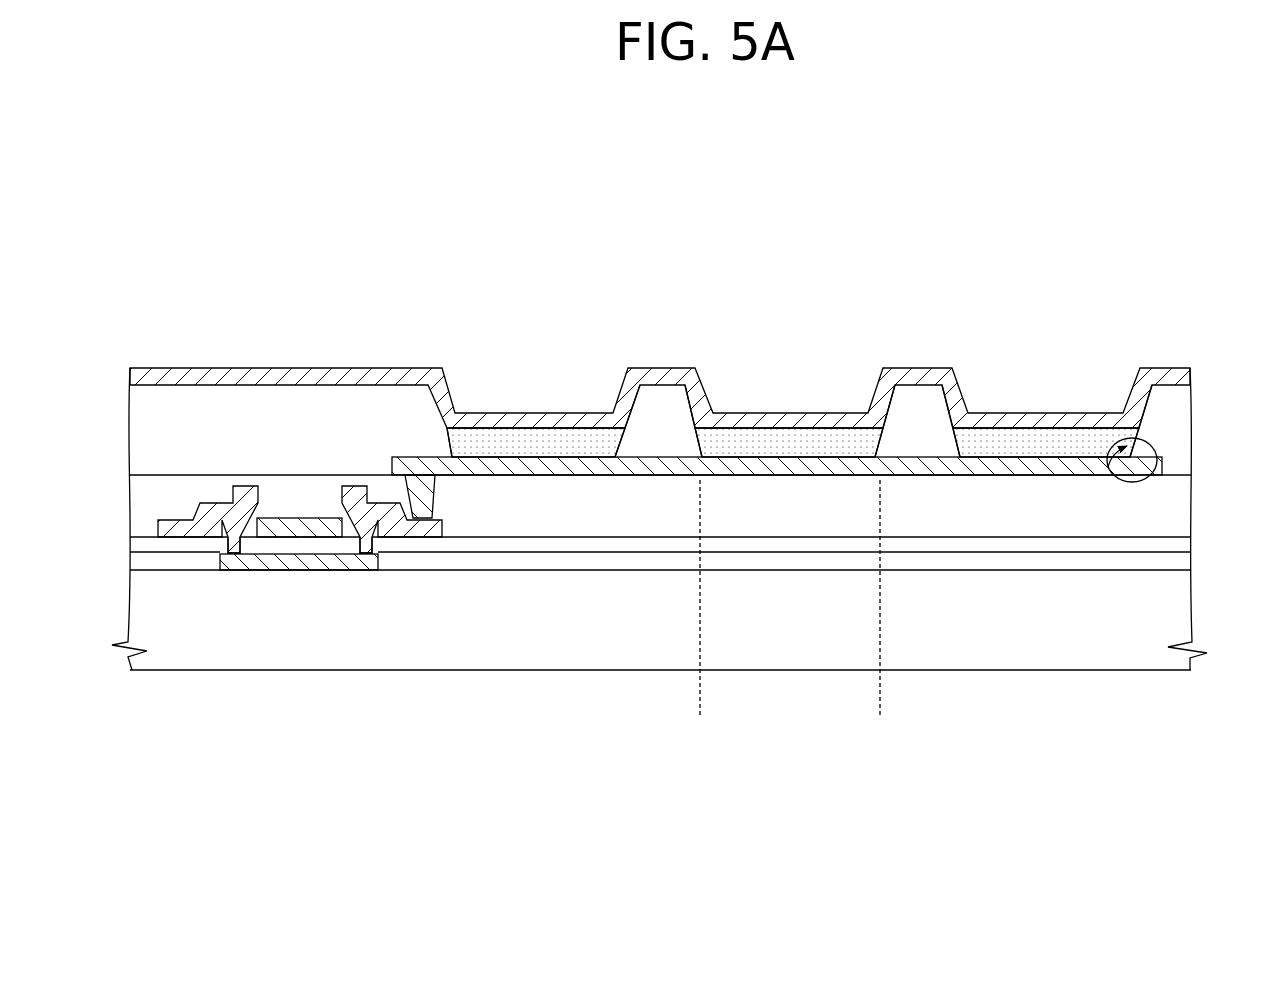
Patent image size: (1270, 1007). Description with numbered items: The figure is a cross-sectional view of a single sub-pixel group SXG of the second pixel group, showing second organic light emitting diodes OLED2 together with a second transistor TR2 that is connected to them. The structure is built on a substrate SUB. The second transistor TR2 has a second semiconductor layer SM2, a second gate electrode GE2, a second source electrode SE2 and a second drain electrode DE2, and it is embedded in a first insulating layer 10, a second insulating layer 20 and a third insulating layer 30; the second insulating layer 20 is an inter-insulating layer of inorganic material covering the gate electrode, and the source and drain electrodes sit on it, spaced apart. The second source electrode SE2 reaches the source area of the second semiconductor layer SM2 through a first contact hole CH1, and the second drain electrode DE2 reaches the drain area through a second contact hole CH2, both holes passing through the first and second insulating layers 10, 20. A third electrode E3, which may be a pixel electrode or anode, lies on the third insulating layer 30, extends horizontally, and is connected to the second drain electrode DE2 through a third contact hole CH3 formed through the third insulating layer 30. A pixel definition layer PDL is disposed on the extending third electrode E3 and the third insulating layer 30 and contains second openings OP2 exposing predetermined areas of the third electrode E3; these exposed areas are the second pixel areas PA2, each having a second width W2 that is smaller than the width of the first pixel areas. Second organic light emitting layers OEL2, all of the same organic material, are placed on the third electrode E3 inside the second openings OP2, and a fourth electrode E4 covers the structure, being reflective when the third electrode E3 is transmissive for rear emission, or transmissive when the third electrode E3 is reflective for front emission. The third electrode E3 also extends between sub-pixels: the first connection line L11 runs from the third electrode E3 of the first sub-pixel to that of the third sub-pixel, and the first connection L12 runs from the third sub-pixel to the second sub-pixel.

The first contact hole CH1 is at (205, 512).
The second contact hole CH2 is at (395, 510).
The third contact hole CH3 is at (432, 492).
The second organic light emitting diode OLED2 is at (862, 298).
The third electrode E3 is at (730, 462).
The second organic light emitting layer OEL2 is at (782, 443).
The fourth electrode E4 is at (834, 418).
The second pixel area PA2 is at (863, 379).
The sub-pixel group SXG is at (1093, 212).
The pixel definition layer PDL is at (1178, 428).
The second opening OP2 is at (1160, 472).
The third insulating layer 30 is at (1173, 505).
The second insulating layer 20 is at (1180, 545).
The first insulating layer 10 is at (1180, 563).
The substrate SUB is at (1173, 627).
The first connection line L11 is at (700, 478).
The first connection L12 is at (957, 478).
The second width W2 is at (878, 707).
The second source electrode SE2 is at (180, 522).
The second gate electrode GE2 is at (268, 535).
The second semiconductor layer SM2 is at (317, 560).
The second drain electrode DE2 is at (428, 533).
The second transistor TR2 is at (378, 738).